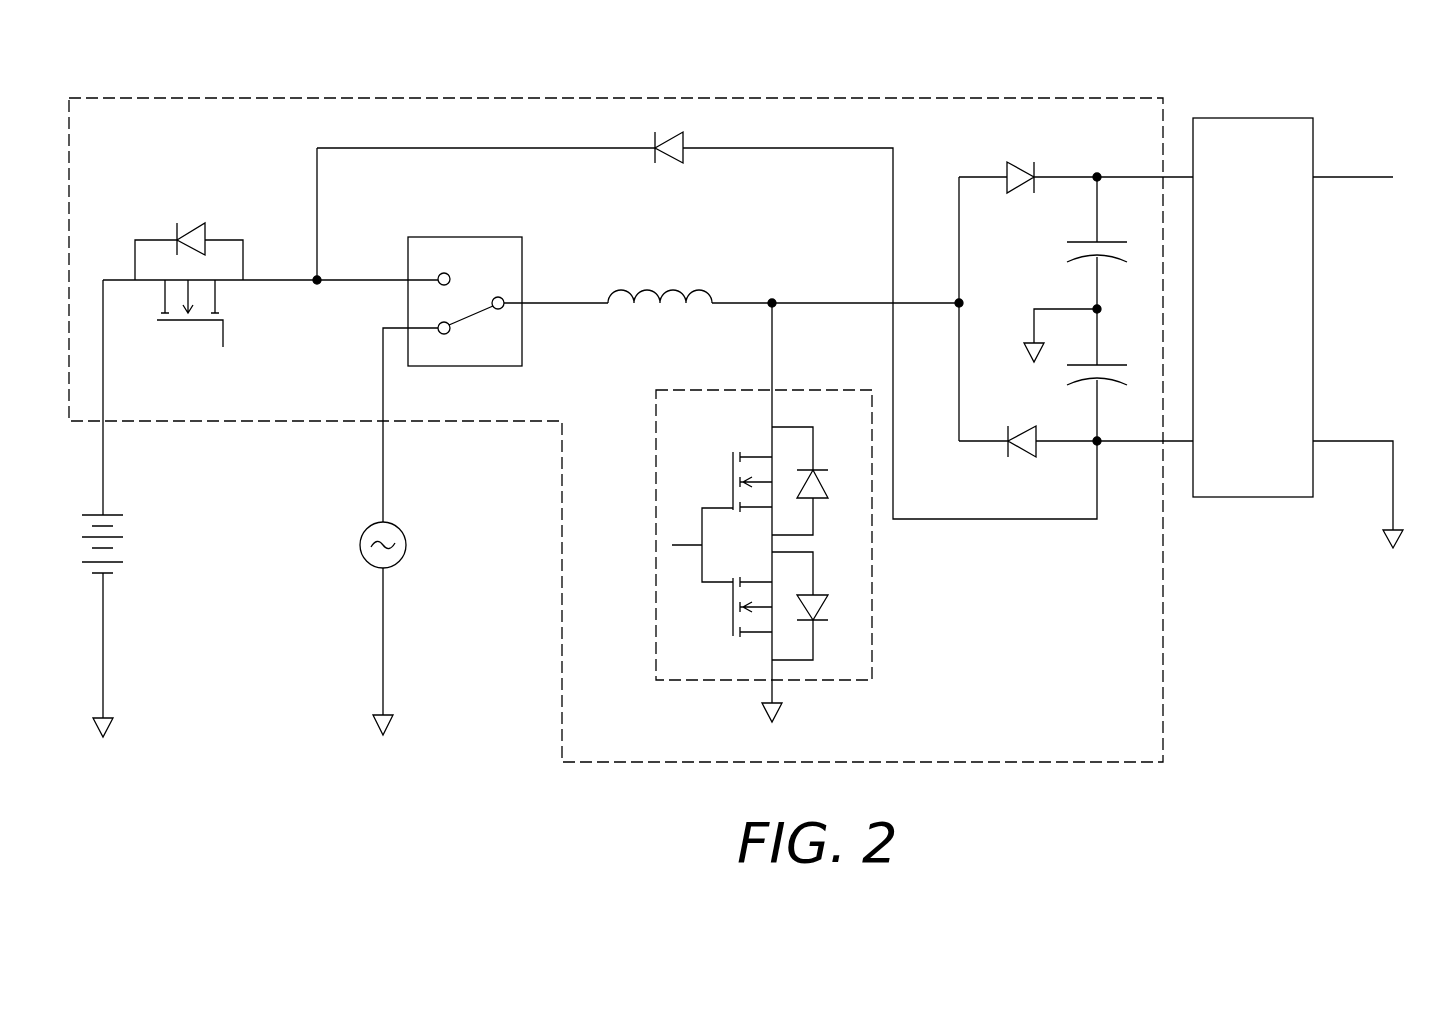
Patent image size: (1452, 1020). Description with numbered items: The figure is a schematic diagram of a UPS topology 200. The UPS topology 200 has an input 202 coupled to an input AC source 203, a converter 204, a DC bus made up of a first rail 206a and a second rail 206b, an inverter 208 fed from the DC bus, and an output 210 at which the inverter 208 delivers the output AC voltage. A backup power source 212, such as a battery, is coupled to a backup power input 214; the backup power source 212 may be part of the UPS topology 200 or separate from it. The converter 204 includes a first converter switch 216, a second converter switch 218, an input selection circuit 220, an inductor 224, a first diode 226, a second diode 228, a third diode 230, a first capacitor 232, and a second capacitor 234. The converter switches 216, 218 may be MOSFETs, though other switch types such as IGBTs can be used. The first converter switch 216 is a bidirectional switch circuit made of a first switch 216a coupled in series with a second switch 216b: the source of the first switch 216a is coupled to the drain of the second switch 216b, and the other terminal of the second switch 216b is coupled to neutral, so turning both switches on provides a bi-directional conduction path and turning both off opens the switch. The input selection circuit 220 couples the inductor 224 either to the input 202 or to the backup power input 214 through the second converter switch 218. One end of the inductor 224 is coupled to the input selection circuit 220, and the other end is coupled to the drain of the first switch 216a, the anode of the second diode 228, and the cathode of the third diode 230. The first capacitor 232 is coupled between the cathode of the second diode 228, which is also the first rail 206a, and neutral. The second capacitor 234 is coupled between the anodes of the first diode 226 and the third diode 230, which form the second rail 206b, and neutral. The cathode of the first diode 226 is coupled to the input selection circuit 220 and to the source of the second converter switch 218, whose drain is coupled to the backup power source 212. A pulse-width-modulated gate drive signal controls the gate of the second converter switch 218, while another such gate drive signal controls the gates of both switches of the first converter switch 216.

The UPS topology 200 is at (873, 58).
The input 202 is at (383, 421).
The input AC source 203 is at (393, 568).
The converter 204 is at (317, 97).
The first rail of DC bus 206a is at (1137, 177).
The second rail of DC bus 206b is at (1133, 443).
The inverter 208 is at (1252, 117).
The output 210 is at (1352, 180).
The backup power source 212 is at (117, 562).
The backup power input 214 is at (103, 421).
The first converter switch 216 is at (820, 512).
The first switch 216a is at (760, 456).
The second switch 216b is at (760, 633).
The second converter switch 218 is at (167, 240).
The input selection circuit 220 is at (472, 237).
The inductor 224 is at (672, 292).
The first diode 226 is at (672, 162).
The second diode 228 is at (1022, 165).
The third diode 230 is at (1020, 456).
The first capacitor 232 is at (1070, 262).
The second capacitor 234 is at (1090, 378).